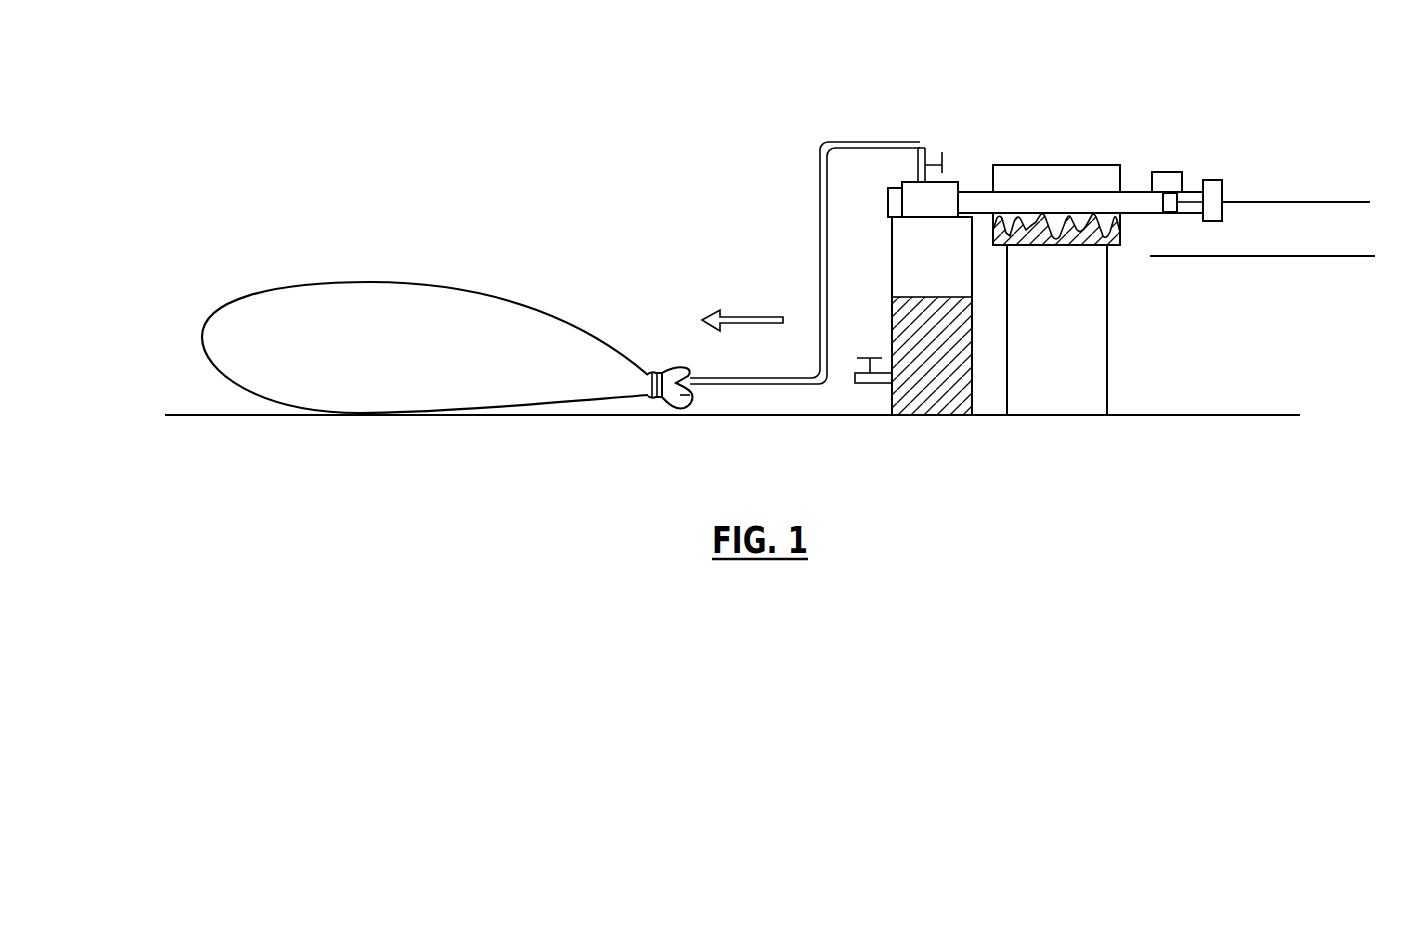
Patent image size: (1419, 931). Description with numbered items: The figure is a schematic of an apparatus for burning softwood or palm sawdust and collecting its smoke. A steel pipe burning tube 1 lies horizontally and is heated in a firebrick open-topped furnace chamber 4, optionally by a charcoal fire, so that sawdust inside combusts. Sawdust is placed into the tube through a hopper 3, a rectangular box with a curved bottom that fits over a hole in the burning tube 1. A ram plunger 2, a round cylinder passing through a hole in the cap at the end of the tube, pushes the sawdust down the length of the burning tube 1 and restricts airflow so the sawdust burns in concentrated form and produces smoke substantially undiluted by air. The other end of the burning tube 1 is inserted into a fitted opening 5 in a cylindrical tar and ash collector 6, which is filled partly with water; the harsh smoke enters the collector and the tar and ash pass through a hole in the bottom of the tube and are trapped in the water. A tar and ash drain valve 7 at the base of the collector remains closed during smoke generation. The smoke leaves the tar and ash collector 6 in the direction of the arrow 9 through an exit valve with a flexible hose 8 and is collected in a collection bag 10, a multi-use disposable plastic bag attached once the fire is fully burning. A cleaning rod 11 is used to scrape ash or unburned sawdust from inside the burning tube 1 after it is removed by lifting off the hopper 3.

The pipe burning tube 1 is at (1213, 180).
The ram plunger 2 is at (1302, 200).
The hopper 3 is at (1168, 172).
The furnace chamber 4 is at (1057, 246).
The fitted opening 5 is at (953, 181).
The tar and ash collector 6 is at (920, 273).
The tar and ash drain valve 7 is at (855, 384).
The exit valve with flexible hose 8 is at (922, 142).
The arrow 9 is at (752, 316).
The collection bag 10 is at (399, 360).
The cleaning rod 11 is at (1255, 257).